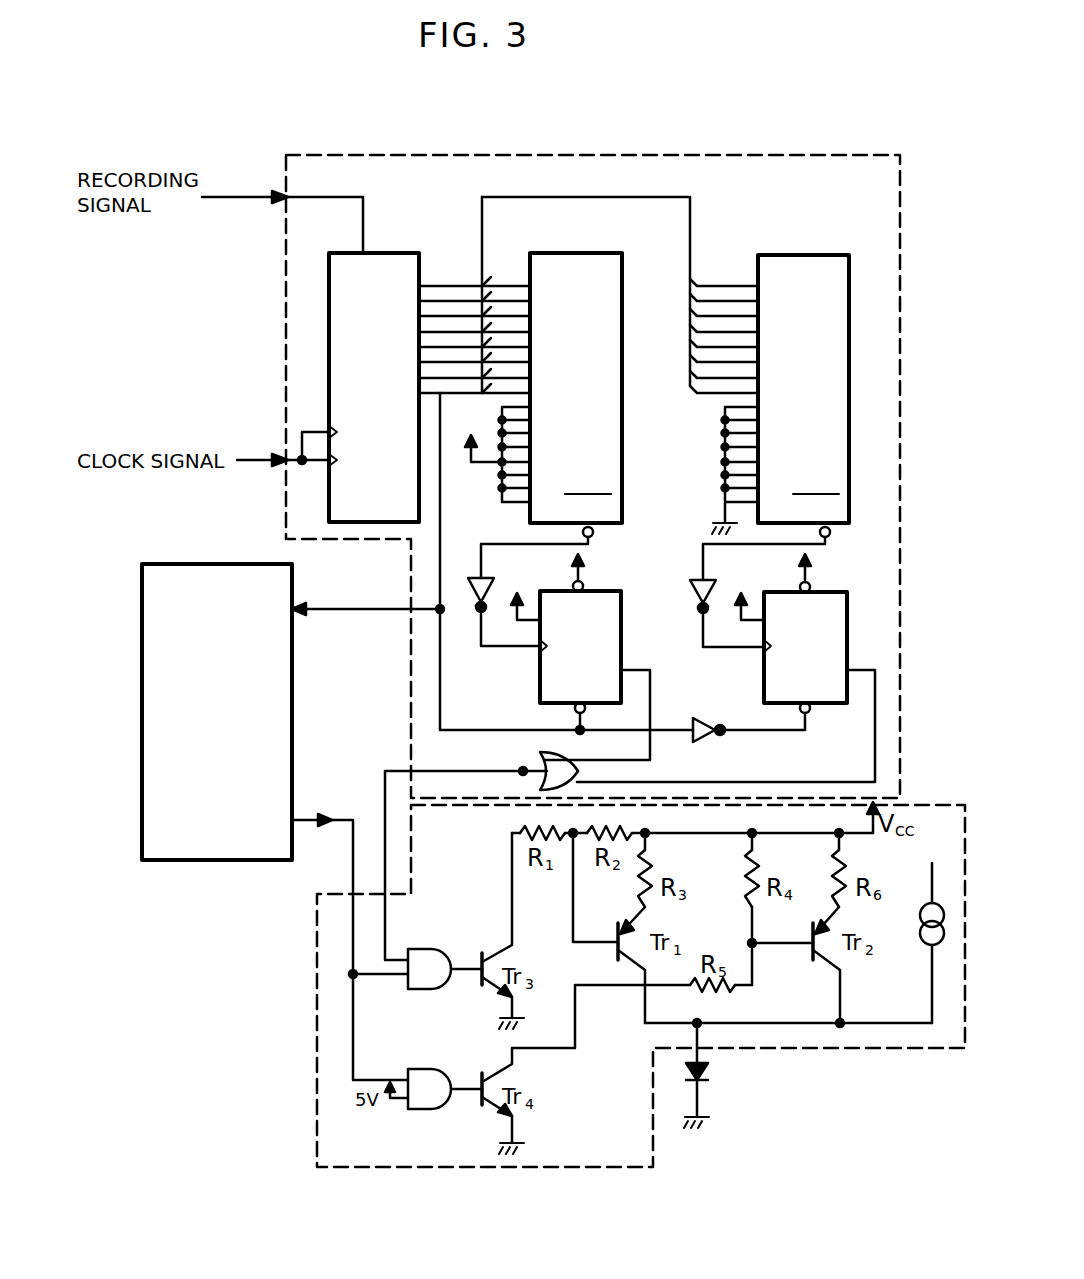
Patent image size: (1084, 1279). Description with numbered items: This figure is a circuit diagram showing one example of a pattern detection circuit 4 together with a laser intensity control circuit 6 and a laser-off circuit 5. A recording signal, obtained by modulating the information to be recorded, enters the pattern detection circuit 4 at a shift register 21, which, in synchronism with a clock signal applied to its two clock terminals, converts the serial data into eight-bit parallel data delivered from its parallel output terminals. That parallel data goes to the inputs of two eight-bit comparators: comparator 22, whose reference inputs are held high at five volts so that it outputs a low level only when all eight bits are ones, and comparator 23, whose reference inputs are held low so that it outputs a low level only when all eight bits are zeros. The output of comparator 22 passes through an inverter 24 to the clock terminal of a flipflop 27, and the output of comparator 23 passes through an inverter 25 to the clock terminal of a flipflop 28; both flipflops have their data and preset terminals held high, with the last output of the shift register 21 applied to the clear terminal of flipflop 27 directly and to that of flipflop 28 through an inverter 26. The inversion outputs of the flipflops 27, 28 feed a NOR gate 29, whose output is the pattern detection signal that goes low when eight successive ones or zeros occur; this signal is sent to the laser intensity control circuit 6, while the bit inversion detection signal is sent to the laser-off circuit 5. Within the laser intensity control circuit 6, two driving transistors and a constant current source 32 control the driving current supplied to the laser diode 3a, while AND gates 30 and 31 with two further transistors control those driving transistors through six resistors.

The laser diode 3a is at (705, 1070).
The pattern detection circuit 4 is at (705, 155).
The laser-off circuit 5 is at (292, 693).
The laser intensity control circuit 6 is at (925, 805).
The shift register 21 is at (395, 253).
The comparator 22 is at (588, 253).
The comparator 23 is at (800, 255).
The inverter 24 is at (479, 578).
The inverter 25 is at (700, 580).
The inverter 26 is at (700, 718).
The flipflop 27 is at (621, 636).
The flipflop 28 is at (847, 640).
The NOR gate 29 is at (540, 756).
The AND gate 30 is at (428, 949).
The AND gate 31 is at (425, 1069).
The constant current source 32 is at (920, 935).